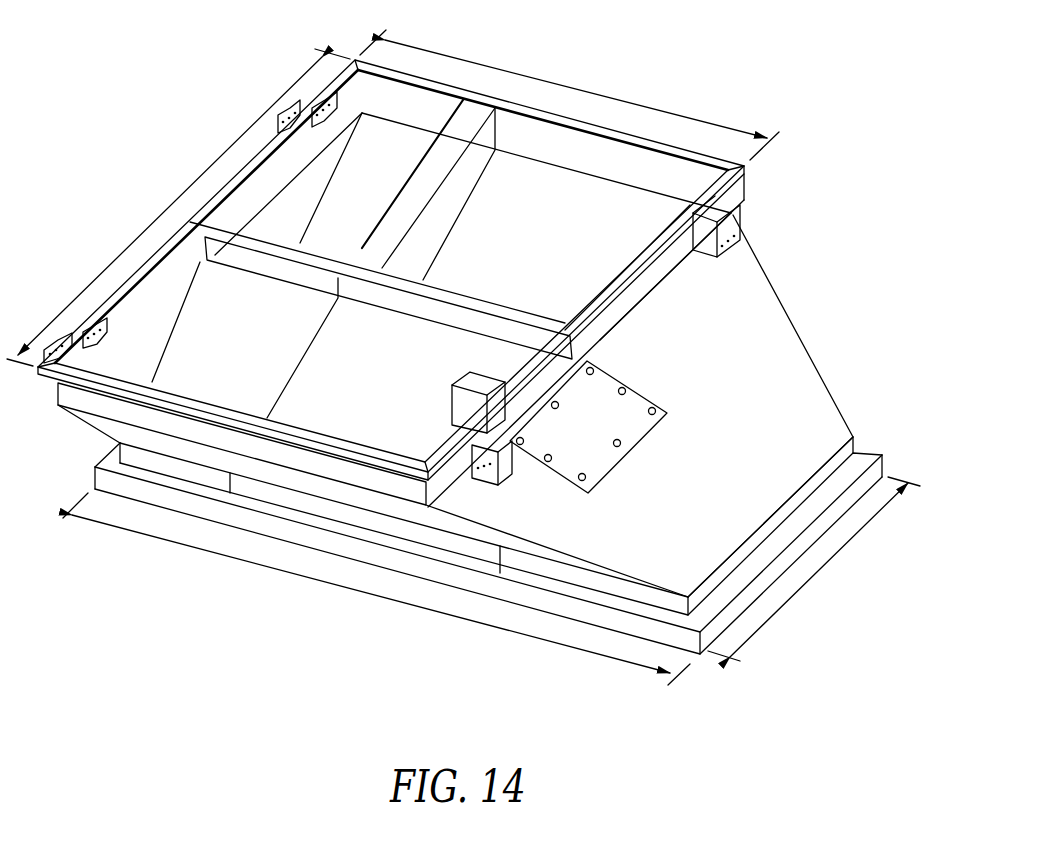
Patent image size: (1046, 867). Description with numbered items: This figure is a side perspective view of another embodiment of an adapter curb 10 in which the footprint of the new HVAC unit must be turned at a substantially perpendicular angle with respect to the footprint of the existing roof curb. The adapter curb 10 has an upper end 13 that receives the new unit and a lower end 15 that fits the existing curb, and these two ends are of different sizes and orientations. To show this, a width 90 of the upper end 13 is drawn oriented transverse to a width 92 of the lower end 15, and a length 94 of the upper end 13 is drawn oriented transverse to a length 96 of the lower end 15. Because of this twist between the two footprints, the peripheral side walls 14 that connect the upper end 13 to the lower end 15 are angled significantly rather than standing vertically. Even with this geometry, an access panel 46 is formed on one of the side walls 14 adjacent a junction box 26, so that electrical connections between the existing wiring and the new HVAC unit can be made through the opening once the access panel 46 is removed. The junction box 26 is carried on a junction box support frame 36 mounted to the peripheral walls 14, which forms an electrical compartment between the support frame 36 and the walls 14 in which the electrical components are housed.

The adapter curb 10 is at (843, 78).
The upper end 13 is at (735, 175).
The peripheral walls 14 is at (790, 362).
The lower end 15 is at (93, 478).
The electrical junction box 26 is at (480, 397).
The junction box support frame 36 is at (430, 417).
The access panel 46 is at (628, 426).
The width of the upper end 90 is at (576, 88).
The width of the lower end 92 is at (820, 572).
The length of the upper end 94 is at (172, 210).
The length of the lower end 96 is at (375, 598).